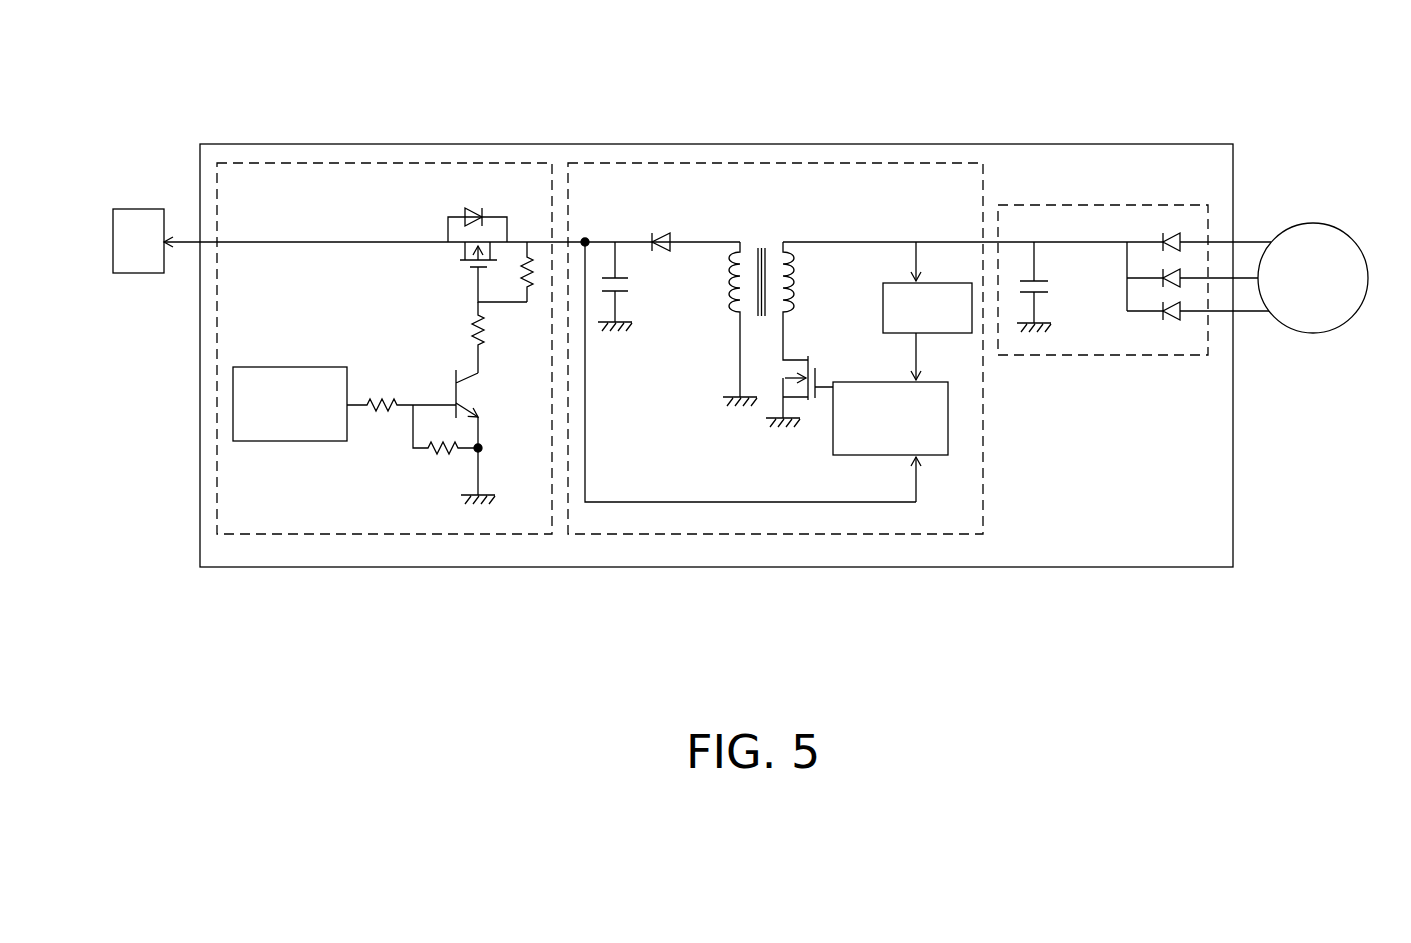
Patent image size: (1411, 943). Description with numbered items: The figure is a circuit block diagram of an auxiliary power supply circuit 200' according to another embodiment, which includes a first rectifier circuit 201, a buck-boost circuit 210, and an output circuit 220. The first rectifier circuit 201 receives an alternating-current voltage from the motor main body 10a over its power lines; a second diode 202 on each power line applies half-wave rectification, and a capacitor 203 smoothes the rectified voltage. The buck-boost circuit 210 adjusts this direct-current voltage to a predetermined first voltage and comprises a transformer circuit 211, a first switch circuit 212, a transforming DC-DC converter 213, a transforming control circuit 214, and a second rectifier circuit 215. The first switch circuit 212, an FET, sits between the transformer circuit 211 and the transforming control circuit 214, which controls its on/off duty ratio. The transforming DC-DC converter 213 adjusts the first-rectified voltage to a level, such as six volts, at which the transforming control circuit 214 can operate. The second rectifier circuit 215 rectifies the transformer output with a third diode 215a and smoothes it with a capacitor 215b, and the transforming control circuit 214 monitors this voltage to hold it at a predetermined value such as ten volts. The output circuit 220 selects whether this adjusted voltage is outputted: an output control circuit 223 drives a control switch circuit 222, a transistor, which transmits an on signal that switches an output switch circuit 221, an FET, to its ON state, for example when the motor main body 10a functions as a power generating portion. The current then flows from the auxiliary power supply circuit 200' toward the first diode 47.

The auxiliary power supply circuit 200' is at (716, 305).
The output circuit 220 is at (312, 534).
The buck-boost circuit 210 is at (853, 534).
The first rectifier circuit 201 is at (1162, 355).
The first diode 47 is at (125, 273).
The output switch circuit 221 is at (455, 203).
The control switch circuit 222 is at (467, 518).
The output control circuit 223 is at (290, 365).
The second rectifier circuit 215 is at (625, 369).
The third diode 215a is at (660, 214).
The capacitor 215b is at (641, 306).
The transformer circuit 211 is at (750, 229).
The first switch circuit 212 is at (771, 399).
The transforming DC-DC converter 213 is at (866, 292).
The transforming control circuit 214 is at (943, 467).
The capacitor 203 is at (1060, 281).
The second diode 202 is at (1153, 216).
The motor main body 10a is at (1320, 333).